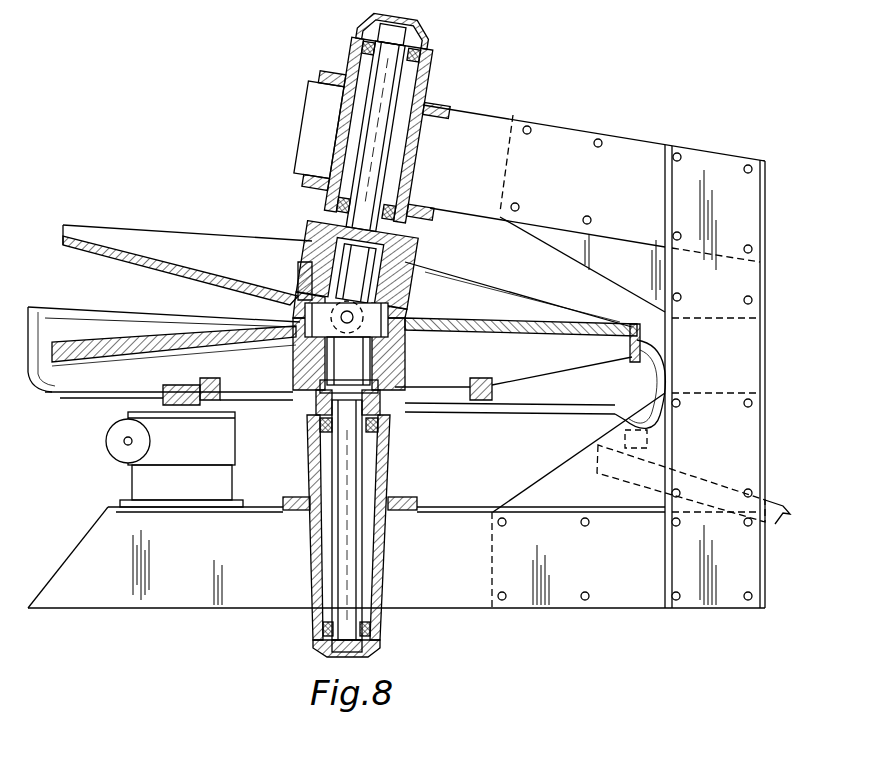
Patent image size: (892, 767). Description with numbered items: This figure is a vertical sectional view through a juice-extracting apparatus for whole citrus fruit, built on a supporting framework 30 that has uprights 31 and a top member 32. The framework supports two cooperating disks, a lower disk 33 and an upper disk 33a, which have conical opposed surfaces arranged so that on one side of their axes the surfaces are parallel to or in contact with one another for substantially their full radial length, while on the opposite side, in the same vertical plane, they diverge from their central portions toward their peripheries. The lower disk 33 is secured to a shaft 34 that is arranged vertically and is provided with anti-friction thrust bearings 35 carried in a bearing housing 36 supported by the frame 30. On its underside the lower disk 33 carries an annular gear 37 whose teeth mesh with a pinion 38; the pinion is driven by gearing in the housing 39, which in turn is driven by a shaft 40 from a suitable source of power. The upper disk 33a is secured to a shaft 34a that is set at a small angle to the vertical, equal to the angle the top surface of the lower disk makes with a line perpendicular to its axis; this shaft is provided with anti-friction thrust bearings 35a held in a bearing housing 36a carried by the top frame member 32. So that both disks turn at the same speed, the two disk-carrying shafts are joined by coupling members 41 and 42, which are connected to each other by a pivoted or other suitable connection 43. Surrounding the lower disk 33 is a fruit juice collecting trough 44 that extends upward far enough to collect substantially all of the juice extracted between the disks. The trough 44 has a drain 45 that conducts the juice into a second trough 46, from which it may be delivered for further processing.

The supporting framework 30 is at (396, 557).
The uprights 31 is at (594, 356).
The top member 32 is at (547, 213).
The lower disk 33 is at (346, 367).
The upper disk 33a is at (247, 262).
The shaft 34 is at (352, 490).
The shaft 34a is at (388, 96).
The anti-friction thrust bearings 35 is at (382, 422).
The anti-friction thrust bearings 35a is at (400, 215).
The bearing housing 36 is at (388, 500).
The bearing housing 36a is at (412, 140).
The annular gear 37 is at (215, 396).
The pinion 38 is at (182, 385).
The housing 39 is at (181, 459).
The shaft 40 is at (115, 445).
The coupling member 41 is at (349, 365).
The coupling member 42 is at (356, 273).
The pivoted connection 43 is at (352, 308).
The fruit juice collecting trough 44 is at (38, 388).
The drain 45 is at (650, 440).
The second trough 46 is at (680, 476).